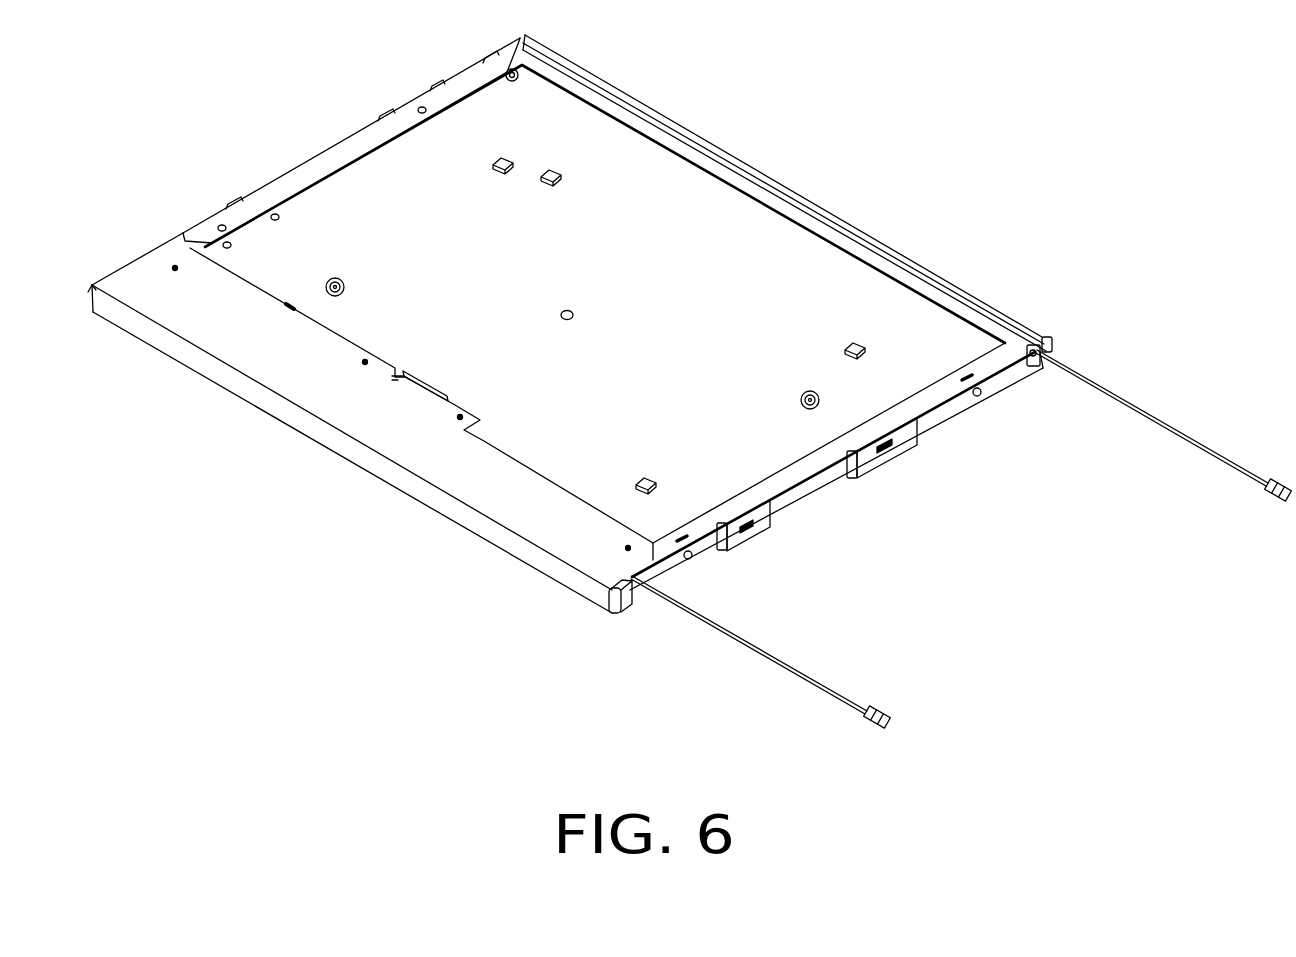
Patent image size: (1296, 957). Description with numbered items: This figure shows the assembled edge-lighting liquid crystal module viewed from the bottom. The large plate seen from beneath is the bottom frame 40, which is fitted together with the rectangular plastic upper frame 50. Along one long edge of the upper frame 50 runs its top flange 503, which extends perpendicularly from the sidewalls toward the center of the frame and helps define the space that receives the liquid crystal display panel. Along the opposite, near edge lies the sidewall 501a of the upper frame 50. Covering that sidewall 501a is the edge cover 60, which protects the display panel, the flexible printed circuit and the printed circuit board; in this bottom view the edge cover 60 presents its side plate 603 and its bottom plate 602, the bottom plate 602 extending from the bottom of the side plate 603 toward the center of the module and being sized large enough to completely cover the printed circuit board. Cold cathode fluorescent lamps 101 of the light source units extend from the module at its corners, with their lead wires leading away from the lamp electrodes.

The bottom frame 40 is at (632, 178).
The upper frame 50 is at (962, 276).
The top flange 503 is at (306, 164).
The edge cover 60 is at (370, 423).
The bottom plate 602 is at (380, 428).
The side plate 603 is at (194, 357).
The sidewall 501a is at (812, 480).
The cold cathode fluorescent lamp 101 is at (736, 645).